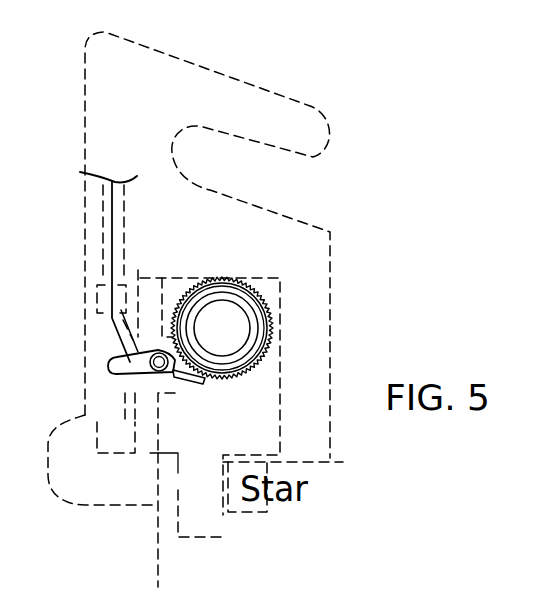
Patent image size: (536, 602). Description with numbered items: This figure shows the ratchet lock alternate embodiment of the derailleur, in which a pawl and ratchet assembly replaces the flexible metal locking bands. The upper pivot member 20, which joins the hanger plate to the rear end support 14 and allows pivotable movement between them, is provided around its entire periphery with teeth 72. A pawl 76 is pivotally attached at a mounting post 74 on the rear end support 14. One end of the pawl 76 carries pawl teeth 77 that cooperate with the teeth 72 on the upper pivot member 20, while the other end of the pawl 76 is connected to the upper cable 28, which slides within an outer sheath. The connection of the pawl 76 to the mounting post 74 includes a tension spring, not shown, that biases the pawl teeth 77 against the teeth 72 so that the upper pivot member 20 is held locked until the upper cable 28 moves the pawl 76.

The rear end support 14 is at (188, 508).
The upper pivot member 20 is at (258, 302).
The upper cable 28 is at (110, 228).
The teeth 72 is at (270, 346).
The mounting post 74 is at (148, 388).
The pawl 76 is at (199, 383).
The pawl teeth 77 is at (212, 376).